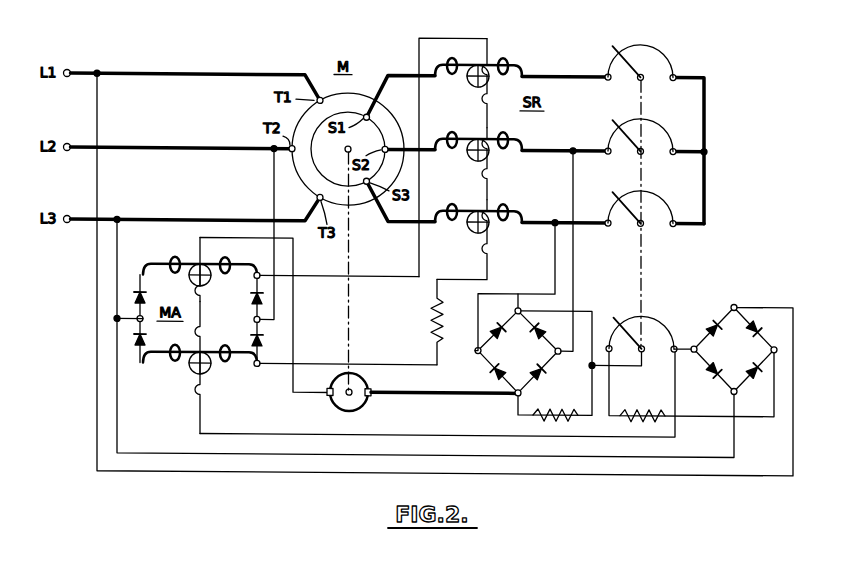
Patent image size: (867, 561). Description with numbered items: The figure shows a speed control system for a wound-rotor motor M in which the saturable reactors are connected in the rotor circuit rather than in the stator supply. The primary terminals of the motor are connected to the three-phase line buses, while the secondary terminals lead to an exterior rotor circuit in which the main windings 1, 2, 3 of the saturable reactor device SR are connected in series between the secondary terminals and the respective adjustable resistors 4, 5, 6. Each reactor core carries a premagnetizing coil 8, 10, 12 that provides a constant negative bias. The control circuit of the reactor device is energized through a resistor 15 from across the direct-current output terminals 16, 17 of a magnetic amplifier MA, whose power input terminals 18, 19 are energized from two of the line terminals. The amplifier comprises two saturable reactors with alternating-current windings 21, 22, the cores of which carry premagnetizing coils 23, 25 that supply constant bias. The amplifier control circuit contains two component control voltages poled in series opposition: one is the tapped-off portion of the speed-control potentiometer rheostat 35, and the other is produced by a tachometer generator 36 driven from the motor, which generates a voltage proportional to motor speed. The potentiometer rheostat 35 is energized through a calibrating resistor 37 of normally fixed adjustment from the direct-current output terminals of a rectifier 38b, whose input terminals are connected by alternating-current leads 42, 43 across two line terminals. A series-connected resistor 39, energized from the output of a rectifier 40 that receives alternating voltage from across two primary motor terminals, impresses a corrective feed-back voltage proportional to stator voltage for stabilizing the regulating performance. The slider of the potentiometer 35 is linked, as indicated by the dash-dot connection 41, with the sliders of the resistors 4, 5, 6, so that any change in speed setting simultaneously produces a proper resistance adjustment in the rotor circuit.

The main winding 1 is at (515, 63).
The main winding 2 is at (518, 136).
The main winding 3 is at (512, 207).
The adjustable resistor 4 is at (660, 52).
The adjustable resistor 5 is at (661, 126).
The adjustable resistor 6 is at (659, 198).
The premagnetizing coil 8 is at (479, 96).
The premagnetizing coil 10 is at (489, 162).
The premagnetizing coil 12 is at (489, 244).
The resistor 15 is at (431, 307).
The direct-current output terminal 16 is at (260, 270).
The direct-current output terminal 17 is at (259, 366).
The power input terminal 18 is at (145, 320).
The power input terminal 19 is at (253, 320).
The alternating-current winding 21 is at (176, 264).
The alternating-current winding 22 is at (175, 371).
The premagnetizing coil 23 is at (206, 290).
The premagnetizing coil 25 is at (208, 380).
The potentiometer rheostat 35 is at (664, 318).
The tachometer generator 36 is at (362, 402).
The calibrating resistor 37 is at (630, 405).
The rectifier 38b is at (718, 352).
The series-connected resistor 39 is at (548, 405).
The rectifier 40 is at (507, 350).
The mechanical linkage of switches 41 is at (644, 265).
The alternating-current lead 42 is at (95, 300).
The alternating-current lead 43 is at (732, 430).